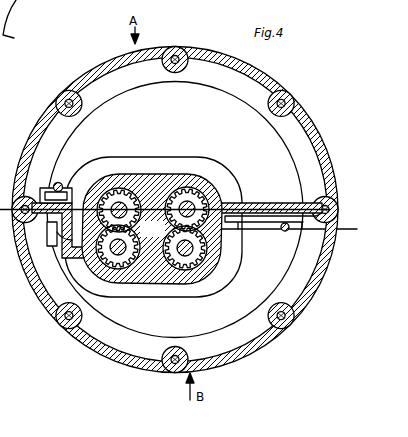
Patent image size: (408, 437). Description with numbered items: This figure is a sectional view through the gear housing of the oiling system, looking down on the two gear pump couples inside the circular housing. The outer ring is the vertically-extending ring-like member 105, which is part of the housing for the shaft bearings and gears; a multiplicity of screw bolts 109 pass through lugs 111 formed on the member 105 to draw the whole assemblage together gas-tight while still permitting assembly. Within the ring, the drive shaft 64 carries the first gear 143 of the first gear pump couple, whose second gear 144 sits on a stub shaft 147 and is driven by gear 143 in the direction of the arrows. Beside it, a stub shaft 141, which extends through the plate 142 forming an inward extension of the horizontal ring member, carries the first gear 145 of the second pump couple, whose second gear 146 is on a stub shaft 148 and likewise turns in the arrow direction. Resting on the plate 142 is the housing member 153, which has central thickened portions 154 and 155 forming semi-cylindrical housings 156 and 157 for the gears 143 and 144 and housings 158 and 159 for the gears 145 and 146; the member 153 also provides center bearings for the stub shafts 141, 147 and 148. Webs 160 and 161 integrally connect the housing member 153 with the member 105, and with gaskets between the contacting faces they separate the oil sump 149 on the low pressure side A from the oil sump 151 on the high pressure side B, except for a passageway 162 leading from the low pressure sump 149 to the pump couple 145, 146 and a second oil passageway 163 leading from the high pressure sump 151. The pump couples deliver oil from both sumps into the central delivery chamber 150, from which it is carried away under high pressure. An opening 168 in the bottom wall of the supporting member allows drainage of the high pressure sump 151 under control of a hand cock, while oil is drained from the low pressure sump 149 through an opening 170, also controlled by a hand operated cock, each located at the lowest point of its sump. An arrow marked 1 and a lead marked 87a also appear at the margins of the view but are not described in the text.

The pump 1 is at (357, 229).
The drive shaft 64 is at (176, 270).
The conduit 87a is at (20, 24).
The vertically-extending ring-like member 105 is at (327, 150).
The screw bolts 109 is at (189, 40).
The lugs 111 is at (181, 61).
The stub shaft 141 is at (94, 282).
The plate 142 is at (216, 280).
The first gear 143 is at (194, 272).
The second gear 144 is at (197, 160).
The first gear 145 is at (72, 270).
The second gear 146 is at (131, 179).
The stub shaft 147 is at (225, 195).
The stub shaft 148 is at (80, 187).
The sump 149 is at (224, 100).
The central delivery chamber 150 is at (173, 192).
The sump 151 is at (276, 280).
The housing member 153 is at (194, 175).
The central thickened portion 154 is at (158, 287).
The central thickened portion 155 is at (153, 186).
The semi-cylindrical housing 156 is at (218, 256).
The semi-cylindrical housing 157 is at (220, 182).
The housing 158 is at (116, 271).
The housing 159 is at (75, 164).
The web 160 is at (278, 204).
The web 161 is at (50, 233).
The passageway 162 is at (63, 255).
The second oil passageway 163 is at (225, 229).
The opening 168 is at (287, 231).
The opening 170 is at (44, 187).